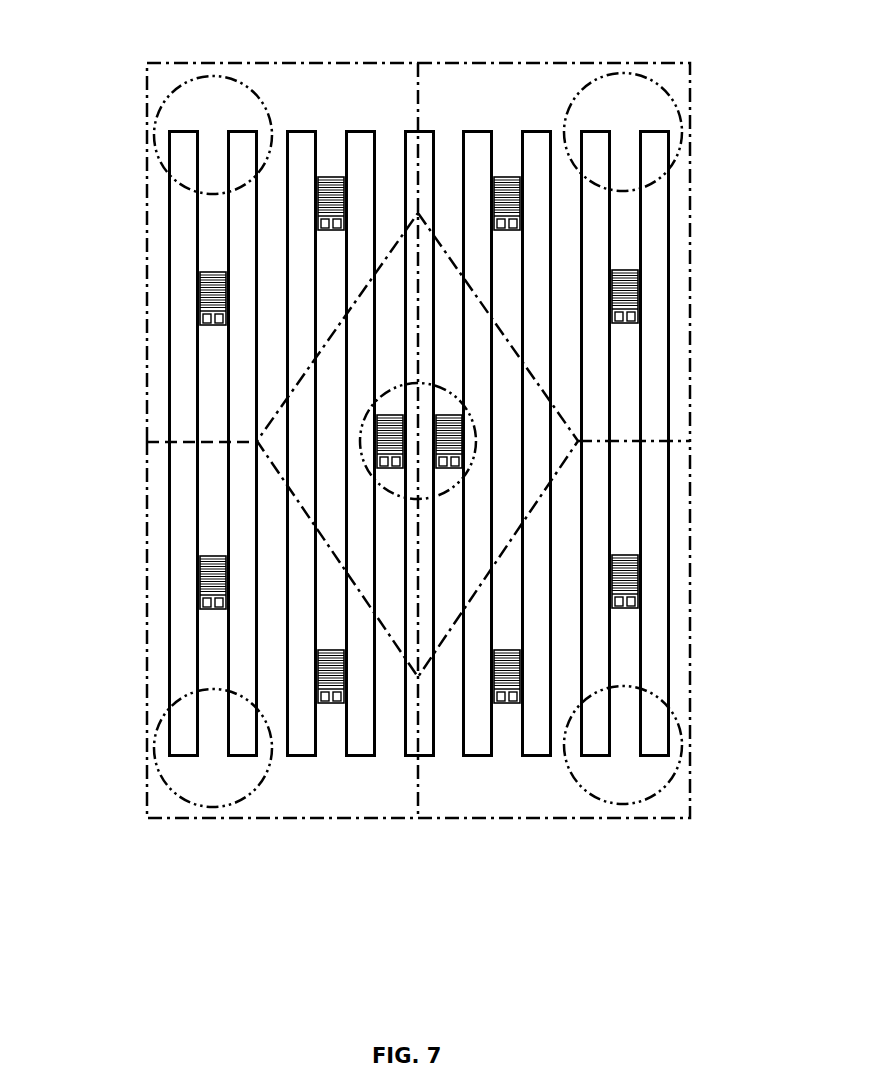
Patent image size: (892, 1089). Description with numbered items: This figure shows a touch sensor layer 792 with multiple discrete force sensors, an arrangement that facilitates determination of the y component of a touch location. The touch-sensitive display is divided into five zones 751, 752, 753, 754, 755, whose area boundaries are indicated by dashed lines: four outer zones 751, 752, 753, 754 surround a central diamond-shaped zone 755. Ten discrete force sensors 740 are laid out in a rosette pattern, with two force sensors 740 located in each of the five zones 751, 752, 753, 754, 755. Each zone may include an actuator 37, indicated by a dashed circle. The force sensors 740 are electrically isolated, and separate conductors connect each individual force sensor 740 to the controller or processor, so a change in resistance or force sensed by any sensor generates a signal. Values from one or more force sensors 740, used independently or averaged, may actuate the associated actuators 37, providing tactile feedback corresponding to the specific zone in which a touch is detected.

The force sensor 740 is at (331, 178).
The actuator 37 is at (158, 152).
The zone 751 is at (375, 63).
The zone 752 is at (490, 63).
The zone 753 is at (290, 819).
The zone 754 is at (518, 819).
The zone 755 is at (273, 413).
The touch sensor layer 792 is at (188, 899).